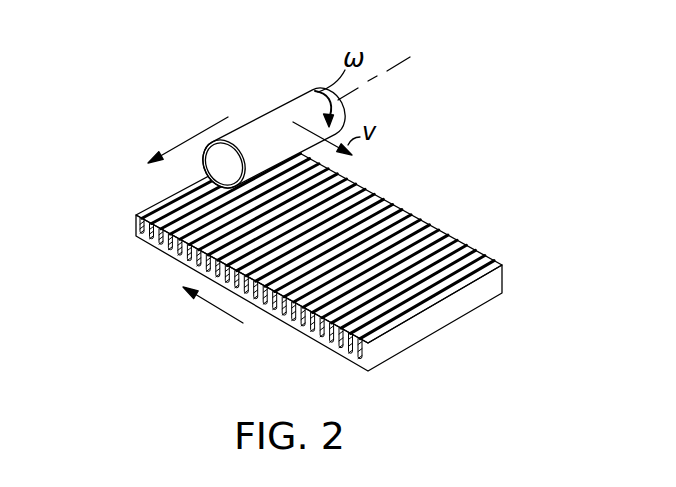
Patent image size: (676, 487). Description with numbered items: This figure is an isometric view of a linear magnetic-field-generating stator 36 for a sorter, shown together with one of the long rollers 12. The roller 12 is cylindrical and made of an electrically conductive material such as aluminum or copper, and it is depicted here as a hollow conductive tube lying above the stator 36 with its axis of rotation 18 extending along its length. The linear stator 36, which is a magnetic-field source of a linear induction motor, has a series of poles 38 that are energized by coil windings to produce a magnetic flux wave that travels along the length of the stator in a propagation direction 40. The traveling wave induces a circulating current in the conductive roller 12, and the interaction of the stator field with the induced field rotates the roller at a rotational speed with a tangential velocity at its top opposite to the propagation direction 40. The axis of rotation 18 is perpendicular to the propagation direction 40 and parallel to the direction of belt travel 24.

The roller 12 is at (280, 107).
The axis of rotation 18 is at (390, 73).
The direction of belt travel 24 is at (192, 137).
The stator 36 is at (458, 305).
The poles 38 is at (377, 207).
The propagation direction 40 is at (217, 302).